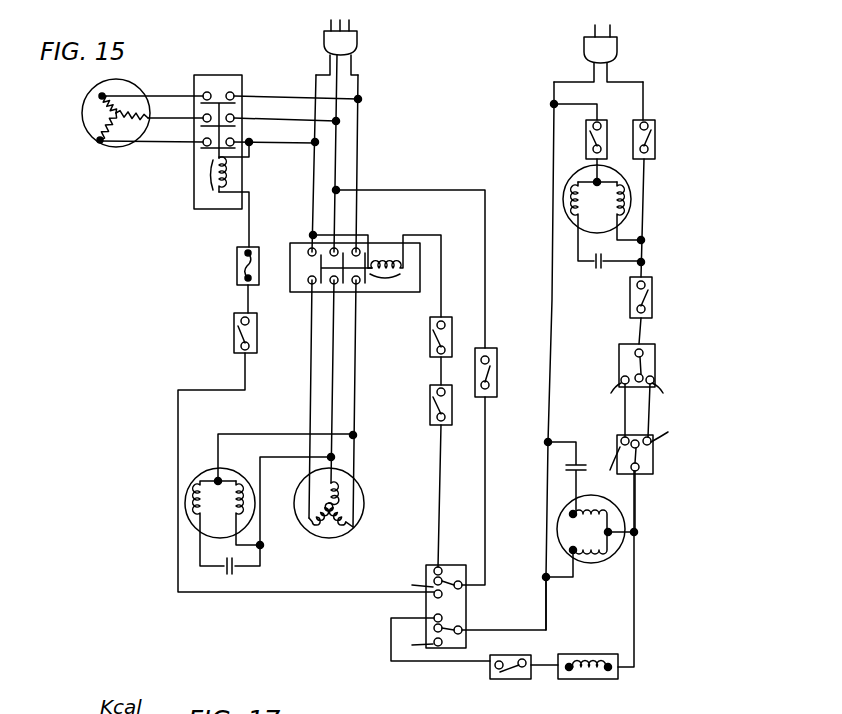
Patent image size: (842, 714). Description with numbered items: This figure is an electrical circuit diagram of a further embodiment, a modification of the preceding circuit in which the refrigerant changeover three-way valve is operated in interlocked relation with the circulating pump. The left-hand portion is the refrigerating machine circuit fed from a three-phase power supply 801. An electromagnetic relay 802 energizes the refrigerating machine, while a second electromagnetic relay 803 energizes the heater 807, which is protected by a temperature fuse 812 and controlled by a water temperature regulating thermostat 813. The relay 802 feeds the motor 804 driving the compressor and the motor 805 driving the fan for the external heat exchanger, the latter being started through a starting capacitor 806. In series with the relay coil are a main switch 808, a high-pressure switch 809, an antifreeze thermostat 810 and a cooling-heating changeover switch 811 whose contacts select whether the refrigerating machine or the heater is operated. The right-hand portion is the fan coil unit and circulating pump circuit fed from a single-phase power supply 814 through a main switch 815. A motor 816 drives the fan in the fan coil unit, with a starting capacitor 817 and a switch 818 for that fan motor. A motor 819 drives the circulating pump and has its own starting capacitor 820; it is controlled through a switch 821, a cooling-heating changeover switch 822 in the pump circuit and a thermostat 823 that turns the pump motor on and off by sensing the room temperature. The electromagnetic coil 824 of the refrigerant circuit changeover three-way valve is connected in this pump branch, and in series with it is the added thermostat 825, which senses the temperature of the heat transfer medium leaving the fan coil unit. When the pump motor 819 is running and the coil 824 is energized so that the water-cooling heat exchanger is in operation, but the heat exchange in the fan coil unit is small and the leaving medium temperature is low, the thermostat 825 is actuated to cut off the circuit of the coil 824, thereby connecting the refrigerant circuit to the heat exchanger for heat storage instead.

The three-phase power supply 801 is at (357, 47).
The electromagnetic relay 802 is at (380, 288).
The electromagnetic relay 803 is at (222, 83).
The motor 804 is at (362, 505).
The motor 805 is at (212, 473).
The starting capacitor 806 is at (238, 571).
The heater 807 is at (113, 150).
The main switch 808 is at (492, 358).
The high-pressure switch 809 is at (430, 350).
The antifreeze thermostat 810 is at (430, 410).
The cooling-heating changeover switch 811 is at (466, 598).
The temperature fuse 812 is at (237, 262).
The water temperature regulating thermostat 813 is at (234, 340).
The single-phase power supply 814 is at (614, 51).
The main switch 815 is at (657, 151).
The motor 816 is at (565, 205).
The starting capacitor 817 is at (596, 270).
The switch 818 is at (586, 153).
The motor 819 is at (590, 565).
The starting capacitor 820 is at (578, 460).
The switch 821 is at (653, 295).
The cooling-heating changeover switch 822 is at (656, 366).
The thermostat 823 is at (653, 455).
The electromagnetic coil 824 is at (598, 680).
The thermostat 825 is at (518, 680).